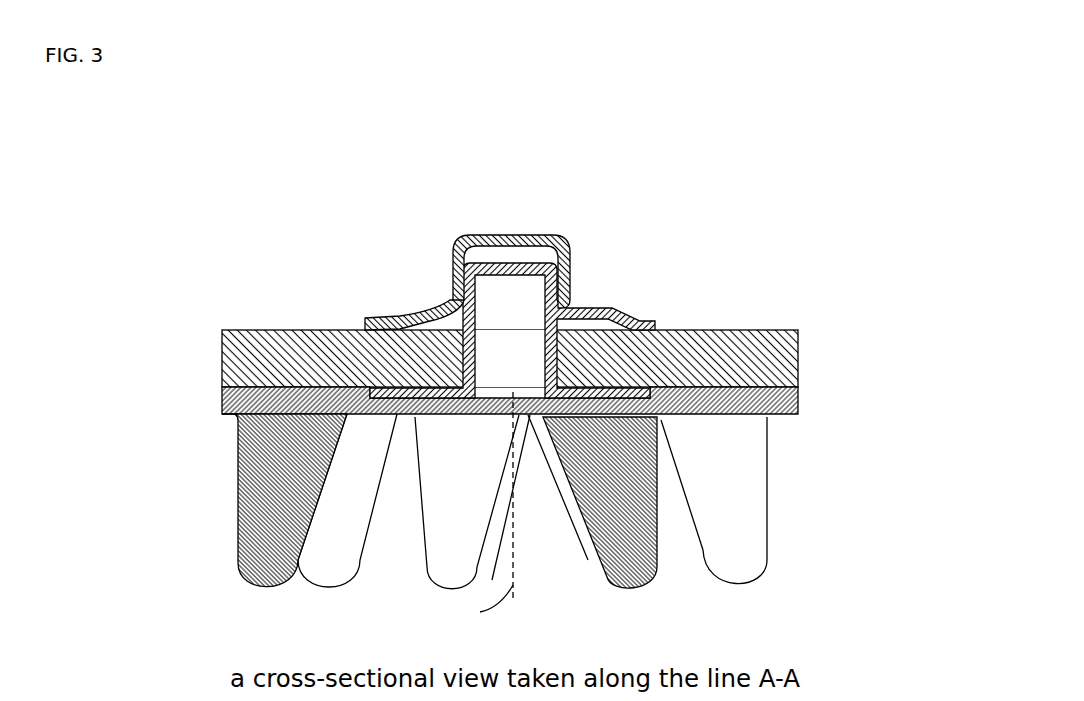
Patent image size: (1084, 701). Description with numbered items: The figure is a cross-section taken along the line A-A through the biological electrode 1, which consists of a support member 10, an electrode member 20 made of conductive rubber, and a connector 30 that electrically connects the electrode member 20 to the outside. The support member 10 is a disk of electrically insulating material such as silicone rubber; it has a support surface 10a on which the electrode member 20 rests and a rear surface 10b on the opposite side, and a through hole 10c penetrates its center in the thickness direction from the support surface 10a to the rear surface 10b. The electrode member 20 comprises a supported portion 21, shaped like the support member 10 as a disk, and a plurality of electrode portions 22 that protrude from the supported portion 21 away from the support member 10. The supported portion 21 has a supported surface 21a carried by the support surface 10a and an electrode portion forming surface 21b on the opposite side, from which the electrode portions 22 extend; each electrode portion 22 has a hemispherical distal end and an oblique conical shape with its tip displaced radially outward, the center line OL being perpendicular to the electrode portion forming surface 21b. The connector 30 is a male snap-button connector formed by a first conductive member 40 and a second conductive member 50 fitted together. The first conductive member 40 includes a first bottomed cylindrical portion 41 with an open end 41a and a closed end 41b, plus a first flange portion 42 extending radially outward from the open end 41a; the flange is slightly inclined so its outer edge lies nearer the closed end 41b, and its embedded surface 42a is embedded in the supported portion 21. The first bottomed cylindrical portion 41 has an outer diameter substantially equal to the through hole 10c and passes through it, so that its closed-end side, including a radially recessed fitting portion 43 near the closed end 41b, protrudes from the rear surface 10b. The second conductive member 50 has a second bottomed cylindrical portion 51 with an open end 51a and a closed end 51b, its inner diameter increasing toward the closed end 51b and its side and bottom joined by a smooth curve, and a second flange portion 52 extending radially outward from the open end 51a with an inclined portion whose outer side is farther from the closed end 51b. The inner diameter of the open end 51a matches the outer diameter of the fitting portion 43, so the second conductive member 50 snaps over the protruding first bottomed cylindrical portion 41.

The biological electrode 1 is at (697, 183).
The support member 10 is at (802, 352).
The support surface 10a is at (803, 402).
The rear surface 10b is at (755, 330).
The through hole 10c is at (477, 414).
The electrode member 20 is at (207, 422).
The supported portion 21 is at (222, 405).
The supported surface 21a is at (262, 385).
The electrode portion forming surface 21b is at (368, 414).
The electrode portions 22 is at (240, 577).
The connector 30 is at (568, 243).
The first conductive member 40 is at (575, 374).
The first bottomed cylindrical portion 41 is at (613, 303).
The open end 41a is at (540, 413).
The closed end 41b is at (526, 262).
The first flange portion 42 is at (665, 392).
The embedded surface 42a is at (662, 448).
The fitting portion 43 is at (573, 297).
The second conductive member 50 is at (437, 296).
The second bottomed cylindrical portion 51 is at (453, 285).
The open end 51a is at (523, 420).
The closed end 51b is at (481, 238).
The second flange portion 52 is at (392, 318).